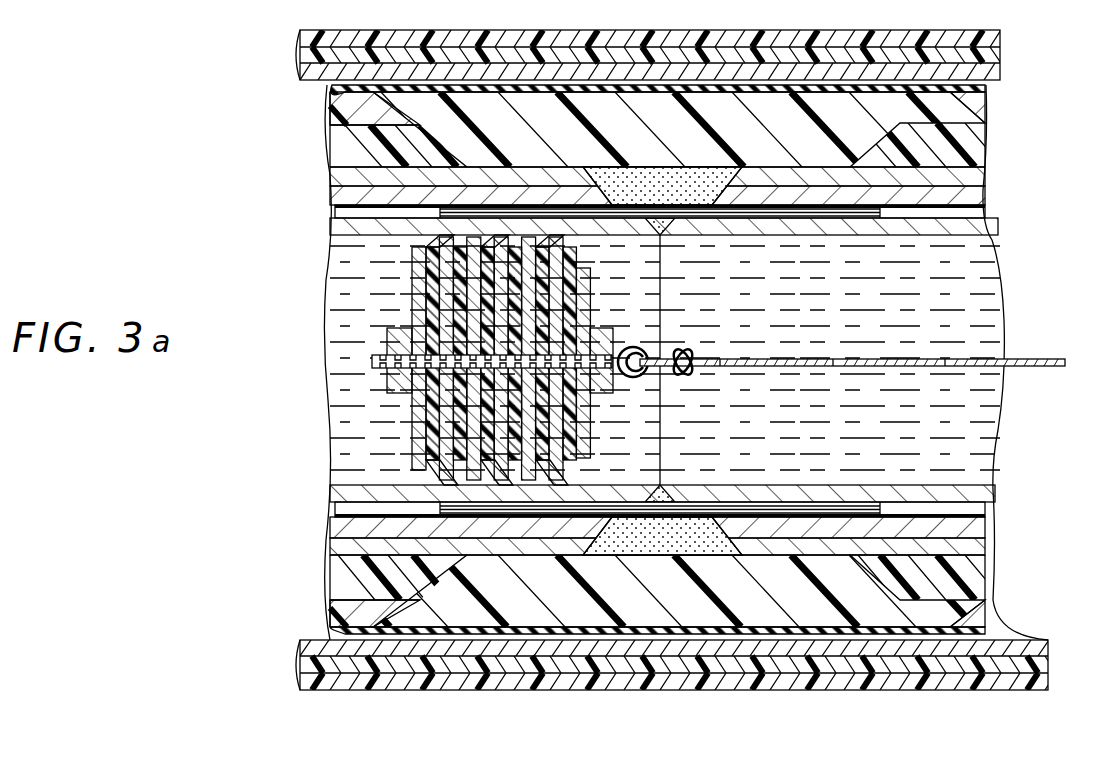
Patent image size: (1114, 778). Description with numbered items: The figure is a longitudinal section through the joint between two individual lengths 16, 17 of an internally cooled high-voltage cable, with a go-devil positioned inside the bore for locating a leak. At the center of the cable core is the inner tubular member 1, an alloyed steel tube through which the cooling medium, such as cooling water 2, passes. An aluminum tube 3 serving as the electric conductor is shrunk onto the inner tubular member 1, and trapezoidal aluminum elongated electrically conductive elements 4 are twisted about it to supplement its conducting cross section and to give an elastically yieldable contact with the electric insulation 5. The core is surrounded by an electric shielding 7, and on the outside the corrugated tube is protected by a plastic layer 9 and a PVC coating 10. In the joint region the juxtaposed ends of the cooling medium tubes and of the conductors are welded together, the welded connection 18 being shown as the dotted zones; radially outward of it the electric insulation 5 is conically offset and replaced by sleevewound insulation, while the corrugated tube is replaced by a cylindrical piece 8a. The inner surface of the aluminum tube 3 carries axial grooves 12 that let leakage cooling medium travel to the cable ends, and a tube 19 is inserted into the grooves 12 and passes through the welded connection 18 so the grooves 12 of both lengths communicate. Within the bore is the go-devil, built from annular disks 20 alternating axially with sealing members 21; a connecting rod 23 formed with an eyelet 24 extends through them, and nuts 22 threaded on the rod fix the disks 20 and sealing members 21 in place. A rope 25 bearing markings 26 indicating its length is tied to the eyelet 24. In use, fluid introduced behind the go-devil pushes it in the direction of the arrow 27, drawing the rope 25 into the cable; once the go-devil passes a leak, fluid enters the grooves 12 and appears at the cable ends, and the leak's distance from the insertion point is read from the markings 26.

The inner tubular member 1 is at (335, 226).
The cooling water 2 is at (335, 530).
The aluminum tube 3 is at (335, 195).
The trapezoidal aluminum elongated electrically conductive elements 4 is at (965, 176).
The electric insulation 5 is at (955, 140).
The electric shielding 7 is at (332, 100).
The cylindrical piece 8a is at (995, 72).
The plastic layer 9 is at (300, 55).
The PVC coating 10 is at (1000, 38).
The grooves 12 is at (970, 212).
The individual cable length 16 is at (316, 408).
The individual cable length 17 is at (1018, 334).
The welded connection 18 is at (650, 182).
The tube 19 is at (775, 212).
The annular disks 20 is at (418, 272).
The sealing members 21 is at (430, 298).
The nuts 22 is at (388, 344).
The connecting rod 23 is at (390, 362).
The eyelet 24 is at (628, 377).
The rope 25 is at (1022, 372).
The markings 26 is at (838, 368).
The arrow 27 is at (720, 393).